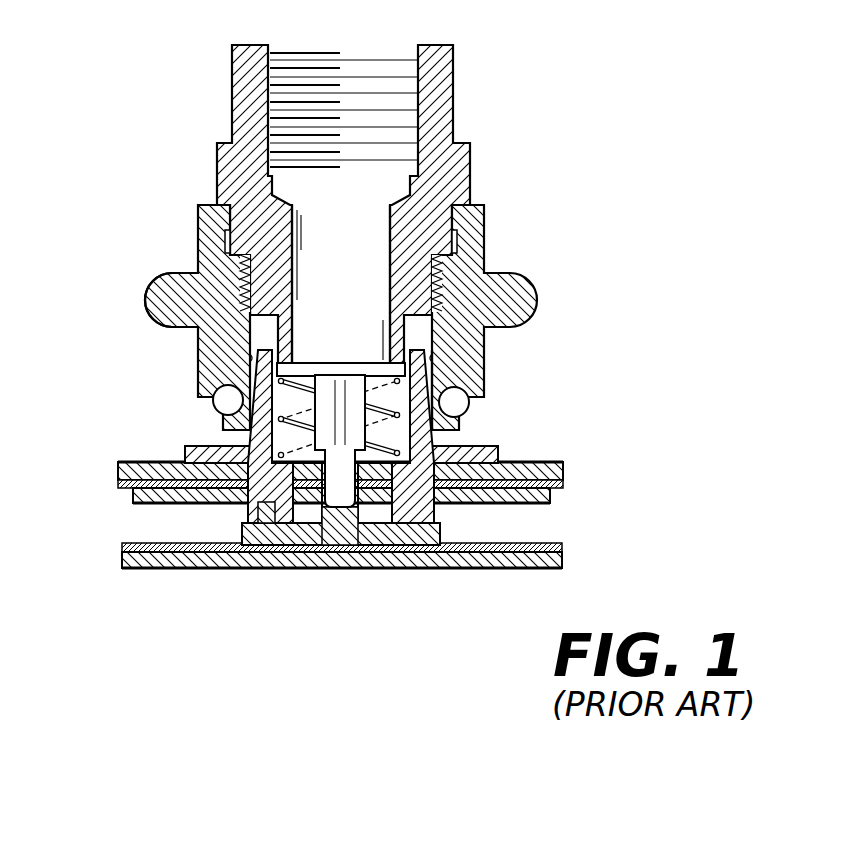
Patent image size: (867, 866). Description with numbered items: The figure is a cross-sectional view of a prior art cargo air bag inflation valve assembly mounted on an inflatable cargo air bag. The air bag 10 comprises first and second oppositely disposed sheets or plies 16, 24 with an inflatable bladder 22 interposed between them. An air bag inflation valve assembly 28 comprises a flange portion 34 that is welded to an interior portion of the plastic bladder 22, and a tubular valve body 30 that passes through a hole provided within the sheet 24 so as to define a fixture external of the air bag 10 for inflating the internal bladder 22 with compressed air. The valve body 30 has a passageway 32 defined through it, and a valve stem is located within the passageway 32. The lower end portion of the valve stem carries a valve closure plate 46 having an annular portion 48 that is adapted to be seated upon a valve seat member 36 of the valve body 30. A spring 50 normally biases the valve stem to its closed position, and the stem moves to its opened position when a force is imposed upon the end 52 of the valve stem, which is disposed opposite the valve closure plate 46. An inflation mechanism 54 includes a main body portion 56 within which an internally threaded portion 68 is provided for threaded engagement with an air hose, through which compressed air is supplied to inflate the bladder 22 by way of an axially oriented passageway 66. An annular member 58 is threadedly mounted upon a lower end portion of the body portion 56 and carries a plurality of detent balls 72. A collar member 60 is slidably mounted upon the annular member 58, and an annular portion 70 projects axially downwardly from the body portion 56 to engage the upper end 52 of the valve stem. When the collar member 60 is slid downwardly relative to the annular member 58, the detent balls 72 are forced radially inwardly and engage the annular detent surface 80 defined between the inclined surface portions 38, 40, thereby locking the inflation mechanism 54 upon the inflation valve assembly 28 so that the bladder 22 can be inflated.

The air bag 10 is at (433, 339).
The sheet 16 is at (152, 570).
The inflatable bladder 22 is at (565, 487).
The sheet 24 is at (560, 462).
The air bag inflation valve assembly 28 is at (433, 346).
The tubular valve body 30 is at (257, 353).
The passageway 32 is at (247, 518).
The flange portion 34 is at (550, 498).
The valve seat member 36 is at (267, 570).
The inclined surface portion 38 is at (455, 367).
The inclined surface portion 40 is at (440, 448).
The valve closure plate 46 is at (383, 550).
The annular portion 48 is at (430, 560).
The spring 50 is at (303, 432).
The end of valve stem 52 is at (312, 362).
The inflation mechanism 54 is at (433, 310).
The main body portion 56 is at (465, 170).
The annular member 58 is at (433, 310).
The collar member 60 is at (433, 310).
The axially oriented passageway 66 is at (362, 247).
The internally threaded portion 68 is at (375, 48).
The annular portion 70 is at (232, 322).
The detent balls 72 is at (214, 392).
The annular detent surface 80 is at (469, 405).